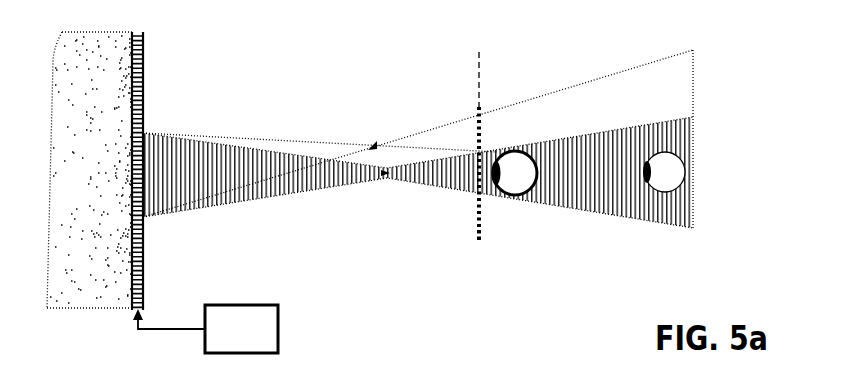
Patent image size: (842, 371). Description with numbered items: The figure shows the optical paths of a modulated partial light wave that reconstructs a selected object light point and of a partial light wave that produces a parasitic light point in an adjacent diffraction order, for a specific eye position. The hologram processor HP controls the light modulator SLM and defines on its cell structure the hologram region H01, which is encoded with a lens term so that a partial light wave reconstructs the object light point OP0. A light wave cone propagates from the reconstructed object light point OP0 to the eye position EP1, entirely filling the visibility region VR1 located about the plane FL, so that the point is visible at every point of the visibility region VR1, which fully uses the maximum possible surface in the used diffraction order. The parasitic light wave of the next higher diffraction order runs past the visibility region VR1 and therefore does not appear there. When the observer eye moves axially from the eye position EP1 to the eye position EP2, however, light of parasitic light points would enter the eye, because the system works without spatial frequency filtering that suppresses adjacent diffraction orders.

The light modulator SLM is at (163, 171).
The hologram region H01 is at (147, 131).
The object light point OP0 is at (418, 172).
The focal line / Fourier plane FL is at (500, 147).
The visibility region VR1 is at (453, 220).
The eye position EP1 is at (492, 170).
The eye position EP2 is at (642, 173).
The hologram processor HP is at (205, 329).